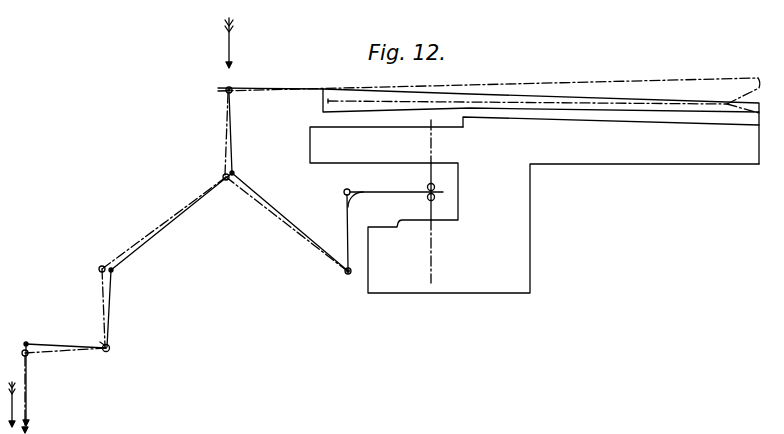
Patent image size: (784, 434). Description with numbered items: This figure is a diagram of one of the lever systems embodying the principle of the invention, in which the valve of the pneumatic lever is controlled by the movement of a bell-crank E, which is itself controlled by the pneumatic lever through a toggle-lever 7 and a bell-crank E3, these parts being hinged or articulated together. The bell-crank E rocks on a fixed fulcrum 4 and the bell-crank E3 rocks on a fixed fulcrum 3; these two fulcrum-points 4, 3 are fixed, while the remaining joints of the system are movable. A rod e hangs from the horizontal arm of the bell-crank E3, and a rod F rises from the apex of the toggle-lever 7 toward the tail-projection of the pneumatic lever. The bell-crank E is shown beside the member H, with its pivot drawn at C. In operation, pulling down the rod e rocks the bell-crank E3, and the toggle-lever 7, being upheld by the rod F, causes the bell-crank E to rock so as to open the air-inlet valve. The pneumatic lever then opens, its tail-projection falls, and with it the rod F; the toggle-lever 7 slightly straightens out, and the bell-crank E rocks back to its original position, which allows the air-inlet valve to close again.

The slide bar H is at (376, 94).
The rod F is at (232, 154).
The toggle-lever 7 is at (164, 228).
The bell-crank E3 is at (110, 323).
The fulcrum 3 is at (108, 356).
The rod e is at (27, 394).
The fulcrum 4 is at (344, 191).
The bell-crank E is at (372, 192).
The pin C is at (437, 197).